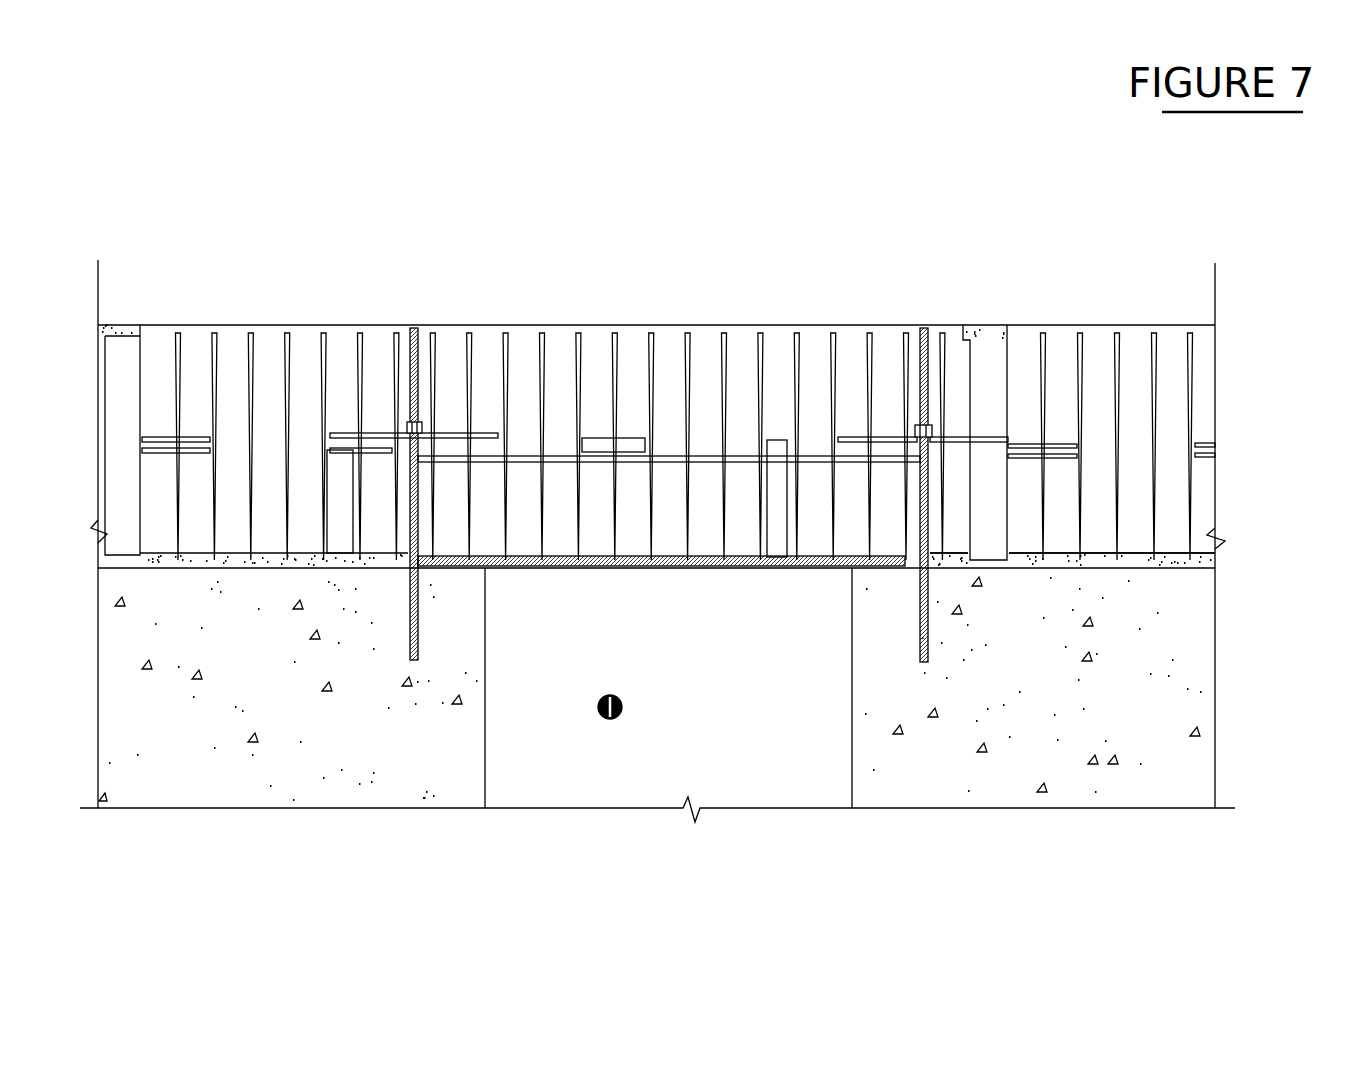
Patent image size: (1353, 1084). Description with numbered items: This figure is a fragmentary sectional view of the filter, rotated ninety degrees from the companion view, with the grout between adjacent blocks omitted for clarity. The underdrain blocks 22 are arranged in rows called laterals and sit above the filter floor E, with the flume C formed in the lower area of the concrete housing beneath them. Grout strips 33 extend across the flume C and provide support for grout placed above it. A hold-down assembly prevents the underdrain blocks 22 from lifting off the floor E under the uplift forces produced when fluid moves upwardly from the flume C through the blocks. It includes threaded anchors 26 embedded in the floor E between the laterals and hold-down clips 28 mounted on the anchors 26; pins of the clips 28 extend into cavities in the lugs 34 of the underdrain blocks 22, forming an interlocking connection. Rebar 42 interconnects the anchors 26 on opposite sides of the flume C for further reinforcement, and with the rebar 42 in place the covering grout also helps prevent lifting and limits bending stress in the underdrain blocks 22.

The underdrain block 22 is at (948, 328).
The anchor 26 is at (420, 382).
The hold-down clip 28 is at (492, 432).
The grout strip 33 is at (595, 568).
The lug 34 is at (198, 430).
The rebar 42 is at (693, 457).
The flume C is at (605, 718).
The floor E is at (1102, 570).